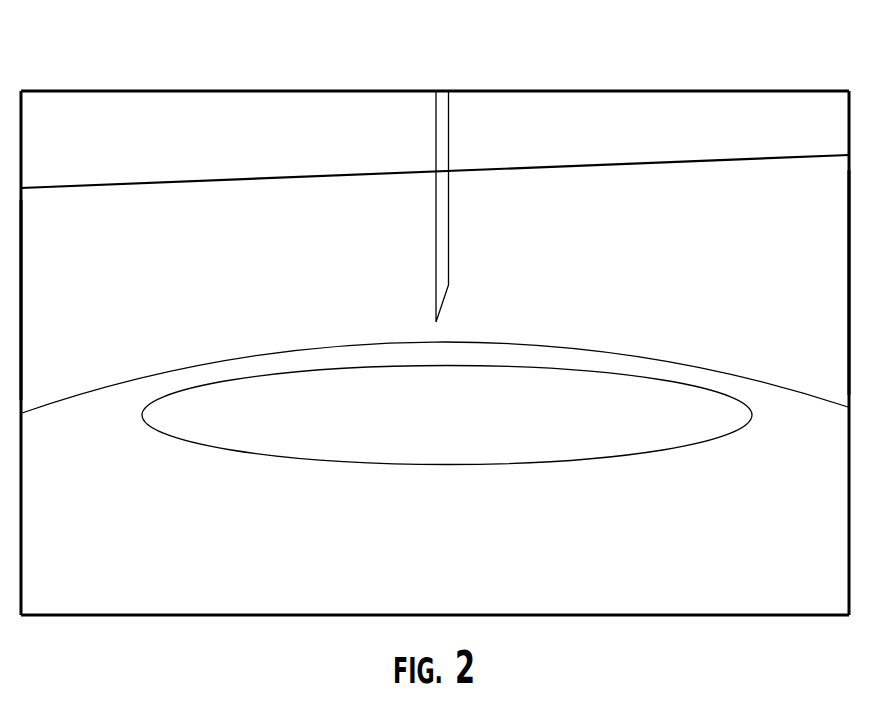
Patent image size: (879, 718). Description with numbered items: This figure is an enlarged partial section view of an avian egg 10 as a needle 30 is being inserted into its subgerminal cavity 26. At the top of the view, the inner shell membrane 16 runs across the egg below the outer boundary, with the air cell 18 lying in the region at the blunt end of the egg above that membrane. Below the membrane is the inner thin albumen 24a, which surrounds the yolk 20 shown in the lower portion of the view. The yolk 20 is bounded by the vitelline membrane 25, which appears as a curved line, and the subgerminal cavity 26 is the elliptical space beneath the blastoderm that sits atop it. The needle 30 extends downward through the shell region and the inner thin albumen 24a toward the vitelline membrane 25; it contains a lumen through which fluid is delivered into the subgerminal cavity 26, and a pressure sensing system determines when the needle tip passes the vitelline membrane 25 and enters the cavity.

The avian egg 10 is at (612, 63).
The inner shell membrane 16 is at (130, 184).
The air cell 18 is at (674, 133).
The needle 30 is at (449, 125).
The inner thin albumen 24a is at (727, 258).
The vitelline membrane 25 is at (612, 350).
The subgerminal cavity 26 is at (595, 422).
The yolk 20 is at (672, 524).